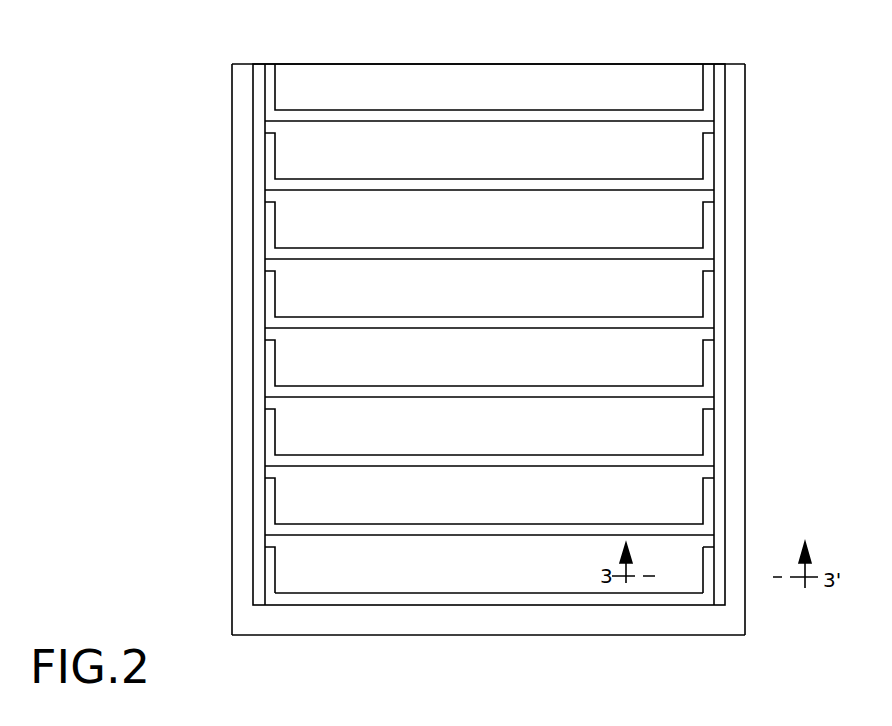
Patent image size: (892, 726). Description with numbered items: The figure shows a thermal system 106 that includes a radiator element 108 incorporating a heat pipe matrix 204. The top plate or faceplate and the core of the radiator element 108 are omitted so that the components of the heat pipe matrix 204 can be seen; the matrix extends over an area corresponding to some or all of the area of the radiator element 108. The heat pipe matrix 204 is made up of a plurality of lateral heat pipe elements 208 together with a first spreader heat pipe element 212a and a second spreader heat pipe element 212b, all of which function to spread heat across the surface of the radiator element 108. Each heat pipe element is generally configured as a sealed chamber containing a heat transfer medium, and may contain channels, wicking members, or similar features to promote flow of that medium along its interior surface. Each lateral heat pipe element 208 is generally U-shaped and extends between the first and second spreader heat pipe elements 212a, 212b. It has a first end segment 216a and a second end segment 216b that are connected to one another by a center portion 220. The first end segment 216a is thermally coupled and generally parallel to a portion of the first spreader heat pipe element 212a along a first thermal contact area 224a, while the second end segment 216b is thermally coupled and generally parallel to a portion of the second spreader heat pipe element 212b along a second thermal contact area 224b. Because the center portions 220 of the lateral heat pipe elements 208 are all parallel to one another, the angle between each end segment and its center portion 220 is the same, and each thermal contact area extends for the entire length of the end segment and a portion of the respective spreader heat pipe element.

The thermal system 106 is at (425, 63).
The radiator element 108 is at (237, 147).
The heat pipe matrix 204 is at (253, 312).
The lateral heat pipe element 208 is at (267, 466).
The first spreader heat pipe element 212a is at (257, 103).
The second spreader heat pipe element 212b is at (720, 383).
The first end segment 216a is at (277, 557).
The second end segment 216b is at (703, 578).
The center portion 220 is at (560, 604).
The first thermal contact area 224a is at (262, 565).
The second thermal contact area 224b is at (712, 578).